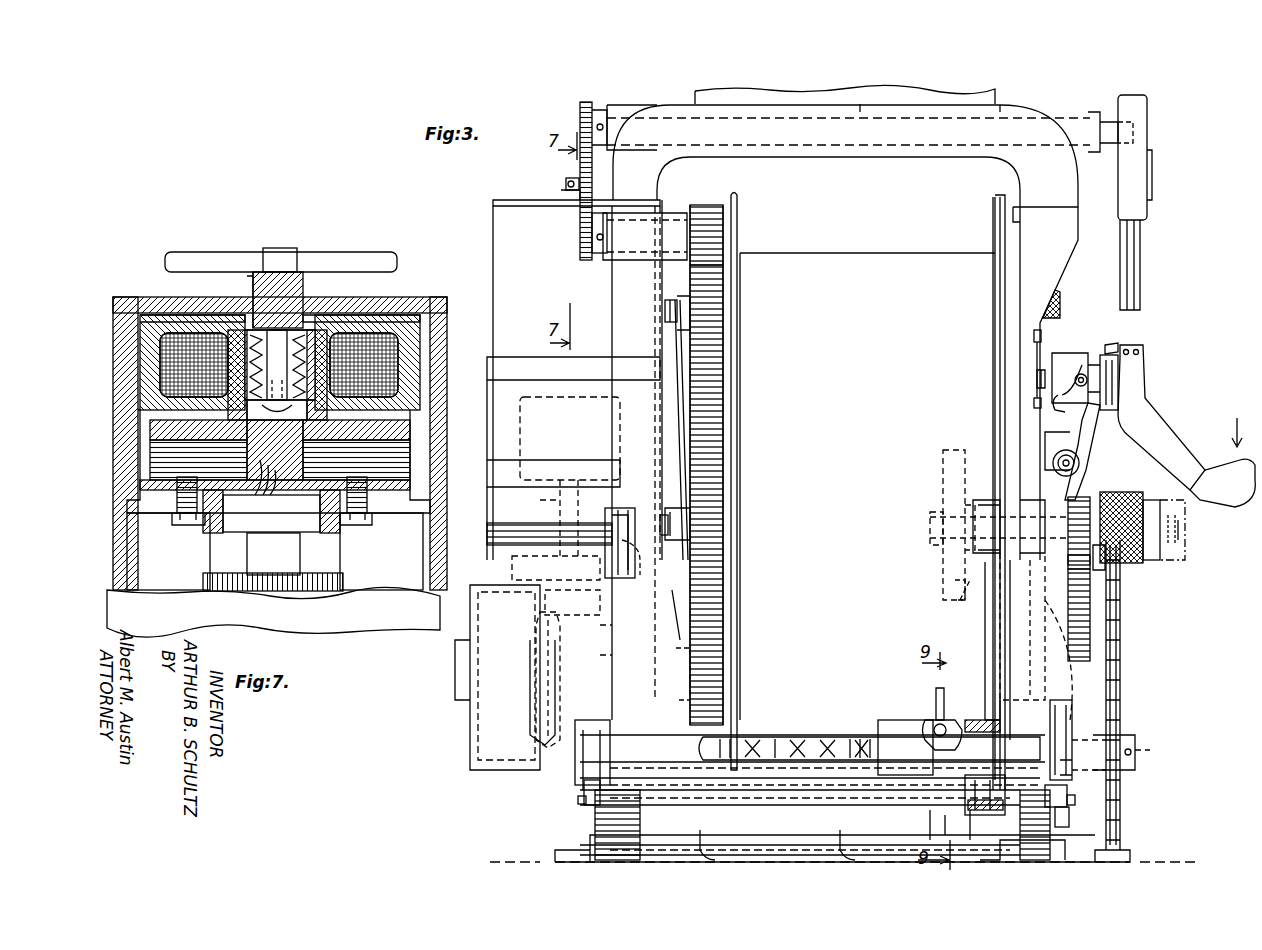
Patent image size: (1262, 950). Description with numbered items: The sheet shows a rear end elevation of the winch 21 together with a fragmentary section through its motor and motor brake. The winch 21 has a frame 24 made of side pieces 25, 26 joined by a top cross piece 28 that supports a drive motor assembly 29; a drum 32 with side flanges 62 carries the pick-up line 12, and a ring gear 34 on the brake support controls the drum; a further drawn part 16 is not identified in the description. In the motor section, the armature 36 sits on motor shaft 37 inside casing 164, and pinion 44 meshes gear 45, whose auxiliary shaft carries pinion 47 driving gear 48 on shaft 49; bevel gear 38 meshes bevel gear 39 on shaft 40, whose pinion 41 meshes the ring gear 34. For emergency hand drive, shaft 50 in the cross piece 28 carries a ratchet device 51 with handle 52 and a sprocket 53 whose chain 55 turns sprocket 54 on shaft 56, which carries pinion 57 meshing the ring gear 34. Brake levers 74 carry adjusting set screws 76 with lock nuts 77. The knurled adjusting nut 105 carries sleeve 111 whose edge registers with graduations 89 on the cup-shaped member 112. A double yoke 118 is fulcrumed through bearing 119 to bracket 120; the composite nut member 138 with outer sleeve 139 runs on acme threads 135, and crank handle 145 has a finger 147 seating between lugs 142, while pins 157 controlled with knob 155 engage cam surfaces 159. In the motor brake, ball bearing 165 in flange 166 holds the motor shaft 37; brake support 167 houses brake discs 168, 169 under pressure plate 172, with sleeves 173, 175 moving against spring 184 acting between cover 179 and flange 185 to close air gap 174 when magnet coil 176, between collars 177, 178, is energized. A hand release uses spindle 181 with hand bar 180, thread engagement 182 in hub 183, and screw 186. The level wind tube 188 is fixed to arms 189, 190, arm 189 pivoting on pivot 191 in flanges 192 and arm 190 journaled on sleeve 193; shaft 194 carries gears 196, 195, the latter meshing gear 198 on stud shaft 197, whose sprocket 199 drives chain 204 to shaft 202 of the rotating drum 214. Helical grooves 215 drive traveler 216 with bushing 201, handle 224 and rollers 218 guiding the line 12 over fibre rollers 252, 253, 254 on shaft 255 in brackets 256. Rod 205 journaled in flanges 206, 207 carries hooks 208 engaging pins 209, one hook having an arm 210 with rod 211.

In FIG. 3, the pick-up line 12 is at (932, 812).
In FIG. 3, the pin 16 is at (668, 540).
In FIG. 3, the winch 21 is at (867, 488).
In FIG. 3, the frame 24 is at (603, 288).
In FIG. 3, the side piece 25 is at (612, 320).
In FIG. 3, the side piece 26 is at (1055, 266).
In FIG. 3, the top cross piece 28 is at (860, 150).
In FIG. 3, the drive motor assembly 29 is at (483, 598).
In FIG. 7, the drive motor assembly 29 is at (405, 620).
In FIG. 3, the drum 32 is at (918, 262).
In FIG. 3, the ring gear 34 is at (723, 562).
In FIG. 3, the armature 36 is at (520, 408).
In FIG. 7, the armature 36 is at (330, 578).
In FIG. 3, the motor shaft 37 is at (550, 520).
In FIG. 7, the motor shaft 37 is at (290, 550).
In FIG. 3, the bevel gear 38 is at (566, 680).
In FIG. 3, the bevel gear 39 is at (540, 732).
In FIG. 3, the shaft 40 is at (568, 690).
In FIG. 3, the pinion 41 is at (723, 660).
In FIG. 3, the pinion 44 is at (580, 522).
In FIG. 3, the gear 45 is at (520, 533).
In FIG. 3, the pinion 47 is at (512, 562).
In FIG. 3, the gear 48 is at (472, 582).
In FIG. 3, the shaft 49 is at (555, 596).
In FIG. 3, the shaft 50 is at (1100, 140).
In FIG. 3, the ratchet device 51 is at (1138, 162).
In FIG. 3, the handle 52 is at (1140, 264).
In FIG. 3, the sprocket 53 is at (580, 112).
In FIG. 3, the sprocket 54 is at (592, 241).
In FIG. 3, the chain 55 is at (566, 181).
In FIG. 3, the shaft 56 is at (638, 250).
In FIG. 3, the pinion 57 is at (708, 218).
In FIG. 3, the side flange 62 is at (740, 220).
In FIG. 3, the brake lever 74 is at (683, 404).
In FIG. 3, the adjusting set screw 76 is at (665, 304).
In FIG. 3, the lock nut 77 is at (678, 315).
In FIG. 3, the graduations 89 is at (1185, 538).
In FIG. 3, the knurled adjusting nut 105 is at (1125, 492).
In FIG. 3, the sleeve 111 is at (1150, 505).
In FIG. 3, the cup-shaped member 112 is at (1185, 515).
In FIG. 3, the double yoke 118 is at (1082, 430).
In FIG. 3, the bearing 119 is at (1053, 456).
In FIG. 3, the bracket 120 is at (1058, 432).
In FIG. 3, the acme machine threads 135 is at (1037, 378).
In FIG. 3, the composite nut member 138 is at (1118, 370).
In FIG. 3, the outer sleeve 139 is at (1068, 355).
In FIG. 3, the lugs 142 is at (1128, 425).
In FIG. 3, the crank handle 145 is at (1228, 468).
In FIG. 3, the finger 147 is at (1112, 347).
In FIG. 3, the knob 155 is at (1062, 300).
In FIG. 3, the pins 157 is at (1036, 332).
In FIG. 3, the cam surfaces 159 is at (1048, 353).
In FIG. 7, the motor casing 164 is at (428, 558).
In FIG. 7, the ball bearing 165 is at (238, 515).
In FIG. 7, the flange 166 is at (160, 510).
In FIG. 7, the brake support 167 is at (410, 470).
In FIG. 7, the brake discs 168 is at (281, 496).
In FIG. 7, the brake discs 169 is at (410, 484).
In FIG. 7, the pressure plate 172 is at (405, 455).
In FIG. 7, the sleeve 173 is at (315, 400).
In FIG. 7, the air gap 174 is at (335, 360).
In FIG. 7, the sleeve 175 is at (370, 345).
In FIG. 7, the magnet coil 176 is at (165, 345).
In FIG. 7, the flanged collar 177 is at (135, 345).
In FIG. 7, the flanged collar 178 is at (172, 335).
In FIG. 7, the cover 179 is at (412, 310).
In FIG. 7, the hand bar 180 is at (325, 262).
In FIG. 7, the spindle 181 is at (240, 345).
In FIG. 7, the screw thread engagement 182 is at (303, 285).
In FIG. 7, the hub 183 is at (250, 281).
In FIG. 7, the spring 184 is at (330, 320).
In FIG. 7, the flange 185 is at (320, 385).
In FIG. 7, the screw 186 is at (300, 410).
In FIG. 3, the tube 188 is at (812, 735).
In FIG. 3, the arm 189 is at (608, 676).
In FIG. 3, the arm 190 is at (1045, 680).
In FIG. 3, the pivot 191 is at (638, 563).
In FIG. 3, the flanges 192 is at (627, 512).
In FIG. 3, the sleeve 193 is at (1040, 510).
In FIG. 3, the shaft 194 is at (930, 523).
In FIG. 3, the overhanging gear 195 is at (1083, 500).
In FIG. 3, the gear 196 is at (943, 467).
In FIG. 3, the stud shaft 197 is at (965, 602).
In FIG. 3, the gear 198 is at (1090, 631).
In FIG. 3, the sprocket 199 is at (1118, 612).
In FIG. 3, the bushing 201 is at (975, 720).
In FIG. 3, the shaft 202 is at (1140, 738).
In FIG. 3, the chain 204 is at (1120, 655).
In FIG. 3, the rod 205 is at (795, 780).
In FIG. 3, the flange 206 is at (592, 752).
In FIG. 3, the flange 207 is at (1068, 770).
In FIG. 3, the hooks 208 is at (584, 789).
In FIG. 3, the pins 209 is at (578, 800).
In FIG. 3, the arm 210 is at (1072, 792).
In FIG. 3, the rod 211 is at (1075, 710).
In FIG. 3, the rotating drum 214 is at (770, 740).
In FIG. 3, the helical grooves 215 is at (866, 740).
In FIG. 3, the traveler 216 is at (900, 722).
In FIG. 3, the ball bearing rollers 218 is at (982, 790).
In FIG. 3, the handle 224 is at (938, 688).
In FIG. 3, the fibre roller 252 is at (723, 848).
In FIG. 3, the fibre roller 253 is at (857, 850).
In FIG. 3, the fibre roller 254 is at (1062, 850).
In FIG. 3, the shaft 255 is at (1005, 808).
In FIG. 3, the brackets 256 is at (595, 824).